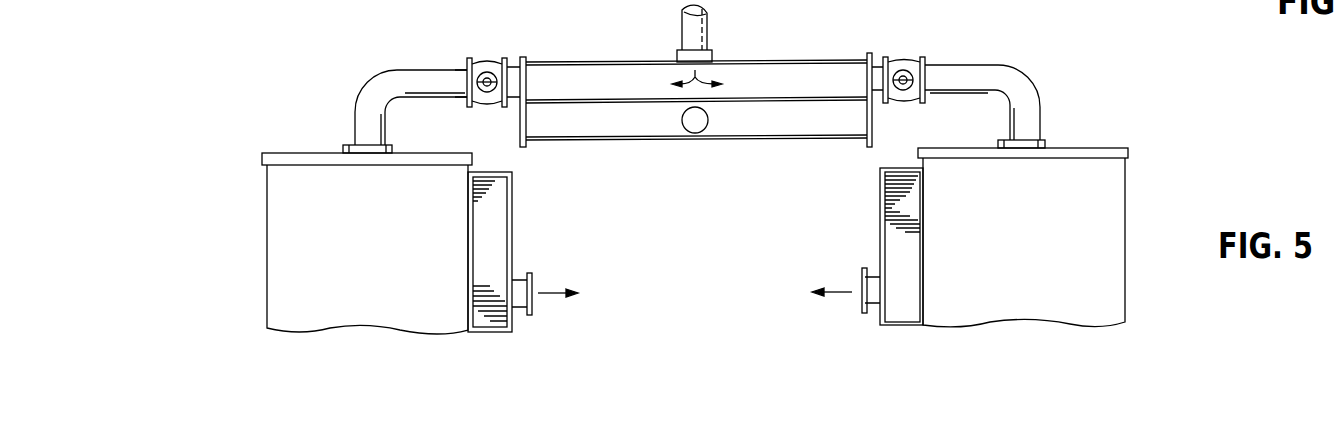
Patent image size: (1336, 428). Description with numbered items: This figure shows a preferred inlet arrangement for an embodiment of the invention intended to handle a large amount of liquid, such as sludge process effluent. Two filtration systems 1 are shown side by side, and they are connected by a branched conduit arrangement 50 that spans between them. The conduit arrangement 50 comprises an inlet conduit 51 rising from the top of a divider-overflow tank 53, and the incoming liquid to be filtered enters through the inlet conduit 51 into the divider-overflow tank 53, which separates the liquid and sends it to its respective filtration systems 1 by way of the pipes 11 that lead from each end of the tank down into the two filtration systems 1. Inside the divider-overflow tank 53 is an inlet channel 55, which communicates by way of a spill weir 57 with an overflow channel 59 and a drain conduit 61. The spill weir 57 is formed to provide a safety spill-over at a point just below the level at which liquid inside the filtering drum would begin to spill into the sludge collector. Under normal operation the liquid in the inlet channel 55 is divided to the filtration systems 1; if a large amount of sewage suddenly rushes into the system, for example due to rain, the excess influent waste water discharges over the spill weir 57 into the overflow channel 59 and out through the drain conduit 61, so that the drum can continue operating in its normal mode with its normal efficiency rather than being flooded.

The filtration system 1 is at (374, 258).
The connecting pipe 11 is at (357, 97).
The branched conduit arrangement 50 is at (727, 87).
The inlet conduit 51 is at (695, 38).
The divider-overflow tank 53 is at (696, 100).
The inlet channel 55 is at (770, 89).
The spill weir 57 is at (612, 100).
The overflow channel 59 is at (727, 138).
The drain conduit 61 is at (702, 130).